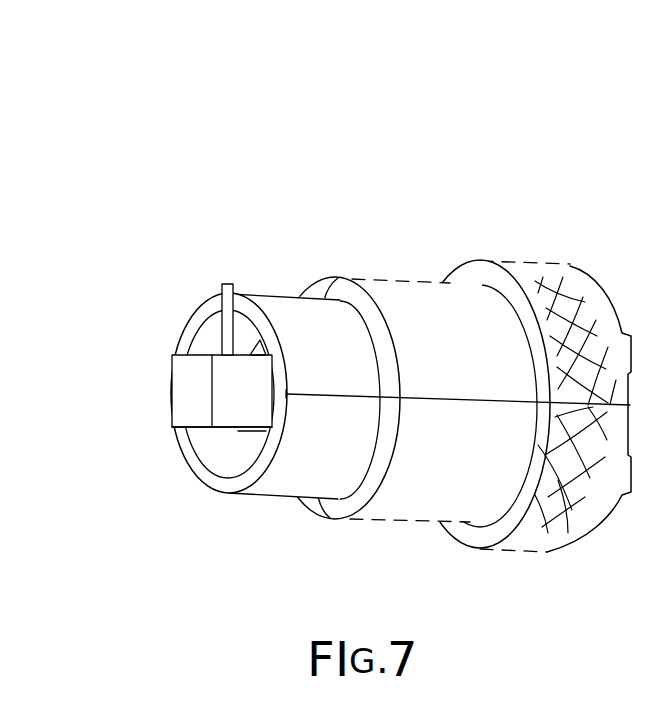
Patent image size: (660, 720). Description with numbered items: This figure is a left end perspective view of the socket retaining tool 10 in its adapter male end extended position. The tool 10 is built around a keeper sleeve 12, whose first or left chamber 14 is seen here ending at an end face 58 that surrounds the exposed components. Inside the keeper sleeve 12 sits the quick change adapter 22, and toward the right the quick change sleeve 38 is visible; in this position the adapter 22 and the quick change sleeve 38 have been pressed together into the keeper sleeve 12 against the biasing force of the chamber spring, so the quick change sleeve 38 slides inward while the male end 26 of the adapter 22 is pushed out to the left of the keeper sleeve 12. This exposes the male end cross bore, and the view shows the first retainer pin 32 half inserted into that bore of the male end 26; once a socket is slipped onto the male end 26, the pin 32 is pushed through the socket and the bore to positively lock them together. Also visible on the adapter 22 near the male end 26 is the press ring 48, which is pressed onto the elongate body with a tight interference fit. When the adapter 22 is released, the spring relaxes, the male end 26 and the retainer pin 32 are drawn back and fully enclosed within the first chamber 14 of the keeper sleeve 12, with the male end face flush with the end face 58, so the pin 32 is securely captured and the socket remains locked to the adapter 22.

The socket retaining tool 10 is at (516, 137).
The keeper sleeve 12 is at (365, 522).
The first or left chamber 14 is at (228, 455).
The quick change adapter 22 is at (208, 393).
The male end 26 is at (176, 425).
The first retainer pin 32 is at (222, 287).
The quick change sleeve 38 is at (542, 262).
The press ring 48 is at (258, 341).
The end face 58 is at (222, 493).